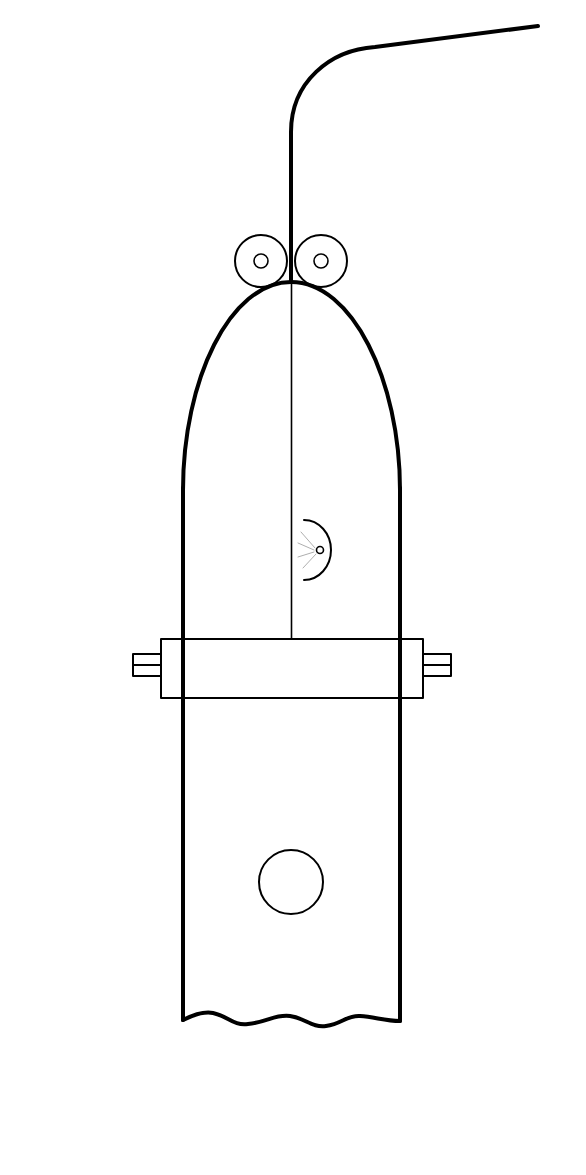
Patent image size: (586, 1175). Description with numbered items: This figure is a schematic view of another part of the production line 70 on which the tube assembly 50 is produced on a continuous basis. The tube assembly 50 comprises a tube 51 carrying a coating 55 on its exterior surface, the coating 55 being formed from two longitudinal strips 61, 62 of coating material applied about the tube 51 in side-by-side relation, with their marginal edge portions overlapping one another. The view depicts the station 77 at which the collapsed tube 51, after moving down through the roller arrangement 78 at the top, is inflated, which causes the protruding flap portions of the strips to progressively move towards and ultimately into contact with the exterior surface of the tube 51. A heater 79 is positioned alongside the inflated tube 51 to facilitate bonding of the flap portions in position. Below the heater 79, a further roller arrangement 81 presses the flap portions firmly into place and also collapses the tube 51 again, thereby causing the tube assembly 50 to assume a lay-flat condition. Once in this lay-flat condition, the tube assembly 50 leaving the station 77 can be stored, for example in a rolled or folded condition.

The production line 70 is at (100, 122).
The tube assembly 50 is at (372, 839).
The tube 51 is at (292, 148).
The coating 55 is at (401, 592).
The first strip 61 is at (339, 328).
The second strip 62 is at (207, 425).
The station 77 is at (172, 370).
The roller arrangement 78 is at (251, 248).
The heater 79 is at (325, 548).
The roller arrangement 81 is at (249, 677).